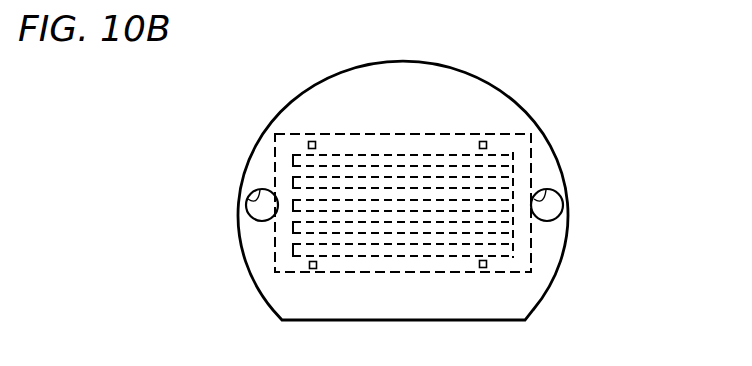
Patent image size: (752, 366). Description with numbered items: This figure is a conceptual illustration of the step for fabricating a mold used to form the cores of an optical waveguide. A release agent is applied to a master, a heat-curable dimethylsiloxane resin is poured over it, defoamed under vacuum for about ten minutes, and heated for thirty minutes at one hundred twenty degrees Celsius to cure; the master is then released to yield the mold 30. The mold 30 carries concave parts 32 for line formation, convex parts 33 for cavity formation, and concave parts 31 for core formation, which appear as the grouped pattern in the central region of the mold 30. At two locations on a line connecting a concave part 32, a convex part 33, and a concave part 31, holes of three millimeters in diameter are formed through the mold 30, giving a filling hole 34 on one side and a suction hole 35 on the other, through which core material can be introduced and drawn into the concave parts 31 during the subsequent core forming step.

The mold 30 is at (488, 103).
The concave parts for core formation 31 is at (387, 197).
The concave parts for line formation 32 is at (490, 143).
The convex parts for cavity formation 33 is at (310, 142).
The filling hole 34 is at (246, 198).
The suction hole 35 is at (562, 190).